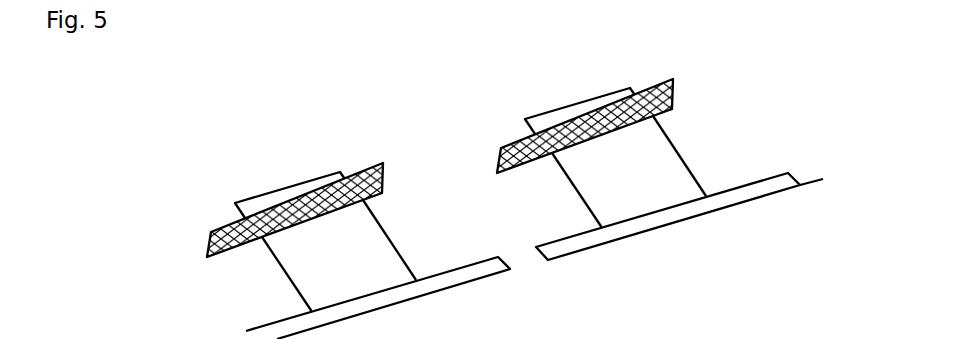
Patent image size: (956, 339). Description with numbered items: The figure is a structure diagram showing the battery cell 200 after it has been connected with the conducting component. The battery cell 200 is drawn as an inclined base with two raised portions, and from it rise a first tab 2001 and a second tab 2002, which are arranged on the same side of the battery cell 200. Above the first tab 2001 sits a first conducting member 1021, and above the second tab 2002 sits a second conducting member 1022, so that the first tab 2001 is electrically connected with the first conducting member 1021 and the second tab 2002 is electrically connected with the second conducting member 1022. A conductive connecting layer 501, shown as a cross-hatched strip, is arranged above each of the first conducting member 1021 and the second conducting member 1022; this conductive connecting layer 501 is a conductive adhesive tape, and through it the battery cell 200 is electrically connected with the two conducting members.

The battery cell 200 is at (448, 272).
The first tab 2001 is at (387, 257).
The second tab 2002 is at (683, 173).
The first conducting member 1021 is at (312, 178).
The second conducting member 1022 is at (565, 115).
The conductive connecting layer 501 is at (378, 171).